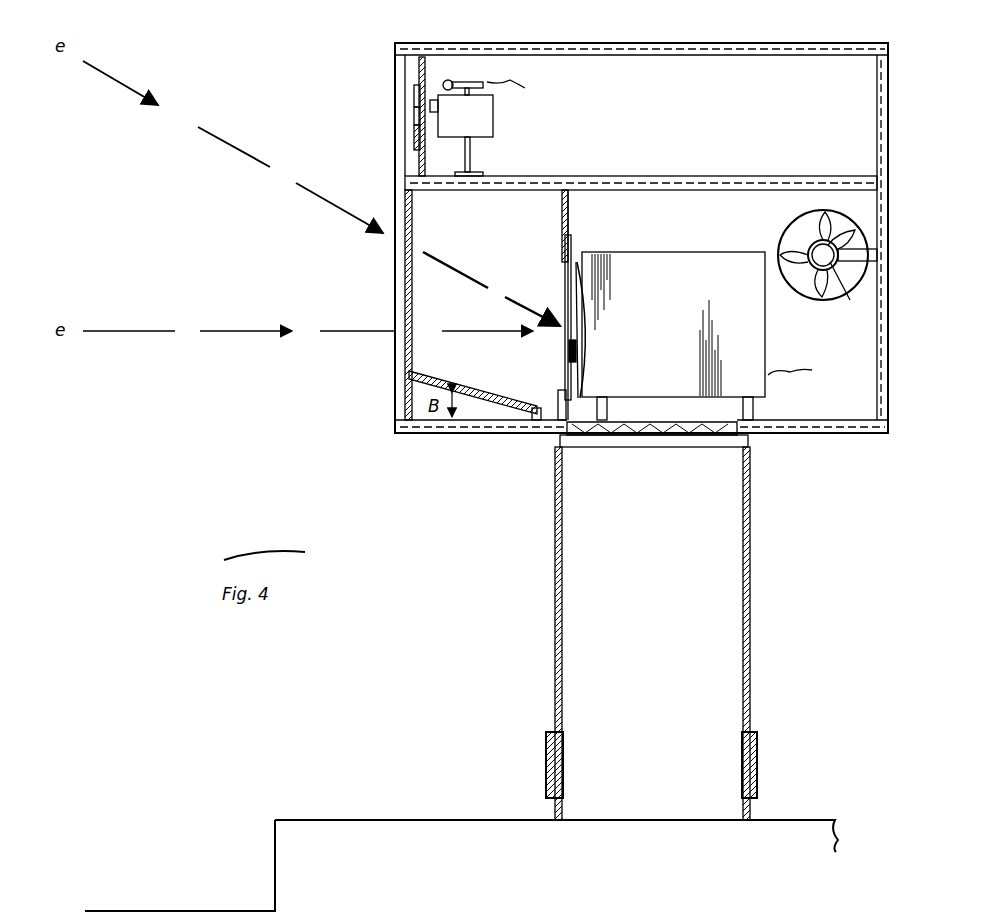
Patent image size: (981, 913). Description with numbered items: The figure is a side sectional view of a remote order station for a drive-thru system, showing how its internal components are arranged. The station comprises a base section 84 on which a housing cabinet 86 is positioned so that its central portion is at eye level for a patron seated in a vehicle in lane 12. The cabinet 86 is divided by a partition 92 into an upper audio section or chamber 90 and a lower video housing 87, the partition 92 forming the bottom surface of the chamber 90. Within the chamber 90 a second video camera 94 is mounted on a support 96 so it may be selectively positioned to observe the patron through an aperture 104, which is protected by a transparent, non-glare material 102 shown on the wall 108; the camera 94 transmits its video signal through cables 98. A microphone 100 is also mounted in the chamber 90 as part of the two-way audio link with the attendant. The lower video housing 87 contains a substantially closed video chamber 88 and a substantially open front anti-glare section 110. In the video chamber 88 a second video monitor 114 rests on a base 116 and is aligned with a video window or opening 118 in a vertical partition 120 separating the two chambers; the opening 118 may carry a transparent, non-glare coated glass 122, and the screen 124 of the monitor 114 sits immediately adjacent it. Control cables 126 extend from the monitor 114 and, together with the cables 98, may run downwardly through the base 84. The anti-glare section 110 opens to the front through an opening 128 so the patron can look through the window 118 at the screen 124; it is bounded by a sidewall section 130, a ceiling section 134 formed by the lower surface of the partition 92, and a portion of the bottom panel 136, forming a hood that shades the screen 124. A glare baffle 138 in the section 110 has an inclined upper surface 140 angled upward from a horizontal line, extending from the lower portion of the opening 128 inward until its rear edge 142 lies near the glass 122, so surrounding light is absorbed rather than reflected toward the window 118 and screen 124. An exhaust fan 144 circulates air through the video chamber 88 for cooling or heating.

The lane 12 is at (164, 911).
The base section 84 is at (712, 601).
The housing cabinet 86 is at (854, 437).
The lower video housing 87 is at (688, 235).
The video chamber 88 is at (816, 331).
The upper audio section or chamber 90 is at (770, 100).
The partition 92 is at (762, 176).
The second video camera 94 is at (482, 107).
The support 96 is at (470, 150).
The cables 98 is at (495, 118).
The microphone 100 is at (465, 82).
The transparent, non-glare material 102 is at (415, 98).
The aperture 104 is at (415, 117).
The wall 108 is at (420, 157).
The open front anti-glare section 110 is at (420, 204).
The second video monitor 114 is at (718, 286).
The base 116 is at (755, 411).
The video window or opening 118 is at (563, 270).
The vertical partition 120 is at (558, 212).
The transparent, non-glare coated glass 122 is at (568, 350).
The screen 124 is at (566, 330).
The control cables 126 is at (768, 375).
The opening 128 is at (398, 248).
The sidewall section 130 is at (536, 381).
The ceiling section 134 is at (558, 196).
The bottom panel 136 is at (541, 440).
The glare baffle 138 is at (472, 423).
The upper surface 140 is at (450, 380).
The rear edge 142 is at (530, 422).
The exhaust fan 144 is at (798, 222).